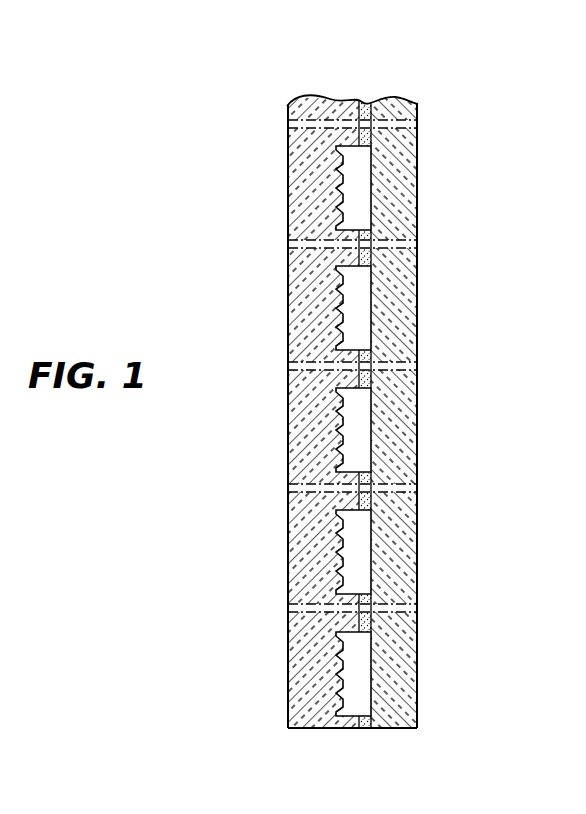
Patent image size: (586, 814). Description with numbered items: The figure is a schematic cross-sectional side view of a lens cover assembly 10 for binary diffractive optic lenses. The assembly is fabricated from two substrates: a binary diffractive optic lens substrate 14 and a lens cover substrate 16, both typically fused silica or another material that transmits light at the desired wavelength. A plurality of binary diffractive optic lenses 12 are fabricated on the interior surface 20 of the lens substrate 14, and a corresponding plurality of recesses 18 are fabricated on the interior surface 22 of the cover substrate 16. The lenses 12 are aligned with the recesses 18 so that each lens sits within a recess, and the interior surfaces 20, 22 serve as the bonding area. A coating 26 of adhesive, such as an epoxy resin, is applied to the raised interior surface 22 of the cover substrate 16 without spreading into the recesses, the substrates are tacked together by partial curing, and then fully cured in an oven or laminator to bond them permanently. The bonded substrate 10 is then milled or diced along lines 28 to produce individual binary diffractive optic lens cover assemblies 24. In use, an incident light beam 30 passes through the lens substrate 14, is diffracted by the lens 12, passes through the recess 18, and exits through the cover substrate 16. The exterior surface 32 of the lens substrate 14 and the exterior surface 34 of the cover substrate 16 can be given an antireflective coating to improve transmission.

The lens cover assembly 10 is at (379, 56).
The binary diffractive optic lens 12 is at (333, 187).
The binary diffractive optic lens substrate 14 is at (302, 274).
The lens cover substrate 16 is at (407, 163).
The lens cover recess 18 is at (362, 642).
The interior surface 20 is at (354, 98).
The interior surface 22 is at (371, 105).
The individual binary diffractive optic lens cover assembly 24 is at (436, 372).
The adhesive coating 26 is at (360, 98).
The dicing lines 28 is at (421, 246).
The incident light beam 30 is at (289, 520).
The exterior surface 32 is at (285, 660).
The exterior surface 34 is at (423, 660).